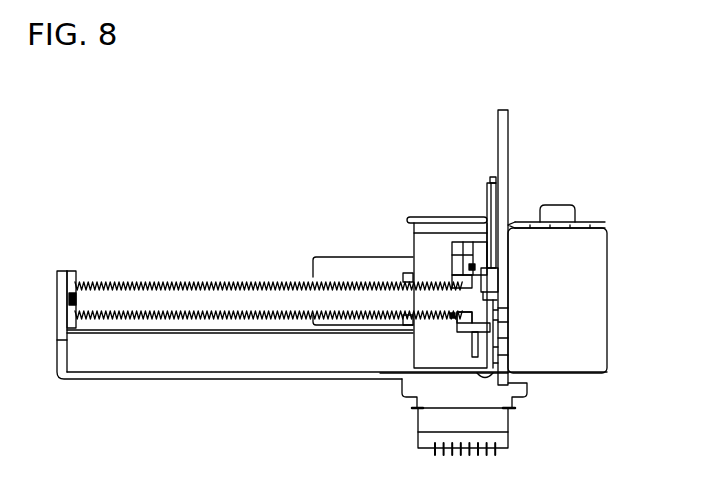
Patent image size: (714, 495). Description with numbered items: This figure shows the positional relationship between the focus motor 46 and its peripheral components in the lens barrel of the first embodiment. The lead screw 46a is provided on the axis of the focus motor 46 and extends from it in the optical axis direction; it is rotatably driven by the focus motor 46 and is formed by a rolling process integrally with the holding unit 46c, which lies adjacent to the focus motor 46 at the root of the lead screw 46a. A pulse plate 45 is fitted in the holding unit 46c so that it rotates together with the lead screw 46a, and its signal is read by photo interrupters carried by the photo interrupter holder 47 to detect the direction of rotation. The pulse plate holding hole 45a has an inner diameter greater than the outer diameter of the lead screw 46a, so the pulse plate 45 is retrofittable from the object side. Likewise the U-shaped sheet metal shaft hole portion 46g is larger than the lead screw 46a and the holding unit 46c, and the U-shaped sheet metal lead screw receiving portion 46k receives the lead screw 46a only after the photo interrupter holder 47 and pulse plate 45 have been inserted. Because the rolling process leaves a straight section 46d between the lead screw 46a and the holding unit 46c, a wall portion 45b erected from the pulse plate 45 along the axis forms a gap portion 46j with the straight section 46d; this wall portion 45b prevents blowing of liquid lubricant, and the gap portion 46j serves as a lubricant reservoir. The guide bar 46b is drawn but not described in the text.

The pulse plate 45 is at (487, 247).
The pulse plate holding hole 45a is at (477, 327).
The wall portion 45b is at (465, 312).
The focus motor 46 is at (590, 264).
The lead screw 46a is at (273, 283).
The guide bar 46b is at (512, 142).
The holding unit 46c is at (460, 277).
The straight section 46d is at (460, 286).
The U-shaped sheet metal shaft hole portion 46g is at (504, 282).
The gap portion 46j is at (463, 318).
The U-shaped sheet metal lead screw receiving portion 46k is at (80, 280).
The photo interrupter holder 47 is at (493, 197).